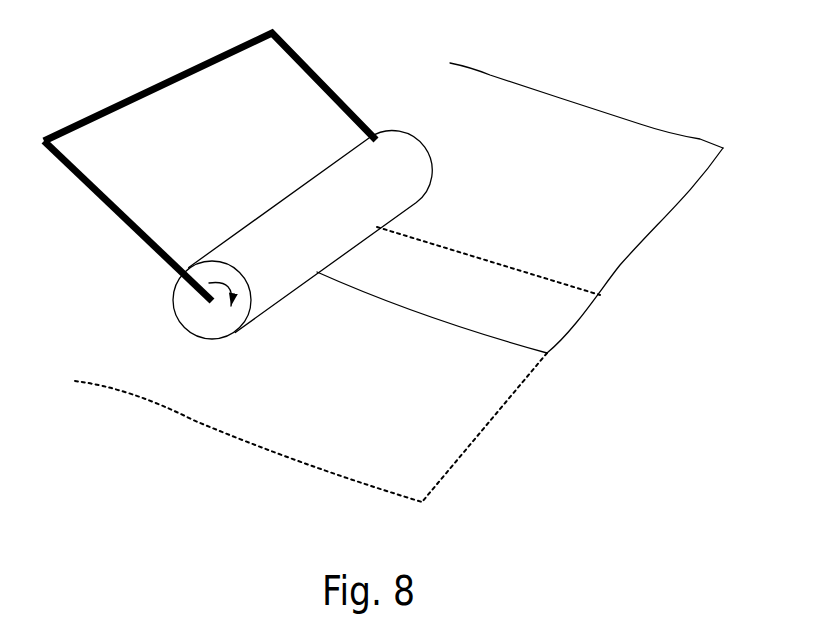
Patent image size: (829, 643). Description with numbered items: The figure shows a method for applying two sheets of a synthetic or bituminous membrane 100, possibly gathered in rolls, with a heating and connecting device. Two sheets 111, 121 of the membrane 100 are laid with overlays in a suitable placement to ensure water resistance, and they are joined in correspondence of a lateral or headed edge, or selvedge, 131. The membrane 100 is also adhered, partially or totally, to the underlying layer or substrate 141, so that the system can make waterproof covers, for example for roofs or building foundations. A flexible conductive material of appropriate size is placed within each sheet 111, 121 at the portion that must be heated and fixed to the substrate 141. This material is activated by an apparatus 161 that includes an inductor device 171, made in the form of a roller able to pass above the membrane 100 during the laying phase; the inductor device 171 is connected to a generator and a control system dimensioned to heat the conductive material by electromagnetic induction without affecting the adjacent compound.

The membrane 100 is at (520, 183).
The sheet 111 is at (668, 189).
The sheet 121 is at (470, 427).
The lateral or headed edge (selvedge) 131 is at (592, 317).
The underlying layer (substrate) 141 is at (330, 506).
The apparatus 161 is at (107, 208).
The inductor device 171 is at (392, 174).